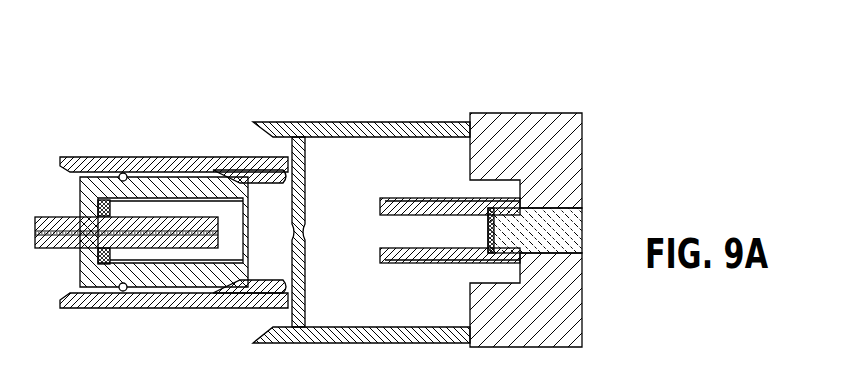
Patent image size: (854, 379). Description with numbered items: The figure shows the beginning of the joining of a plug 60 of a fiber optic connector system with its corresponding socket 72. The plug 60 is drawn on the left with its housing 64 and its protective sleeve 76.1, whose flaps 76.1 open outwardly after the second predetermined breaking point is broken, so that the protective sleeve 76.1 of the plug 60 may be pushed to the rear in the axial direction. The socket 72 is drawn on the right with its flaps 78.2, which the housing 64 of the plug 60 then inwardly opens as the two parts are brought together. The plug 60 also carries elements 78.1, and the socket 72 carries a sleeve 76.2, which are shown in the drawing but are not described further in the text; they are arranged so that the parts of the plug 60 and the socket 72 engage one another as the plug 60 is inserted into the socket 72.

The plug 60 is at (81, 106).
The housing 64 is at (138, 273).
The socket 72 is at (443, 184).
The protective sleeve 76.1 is at (178, 156).
The second contact sleeve housing 76.2 is at (413, 130).
The first latching tab 78.1 is at (255, 172).
The flaps 78.2 is at (302, 285).